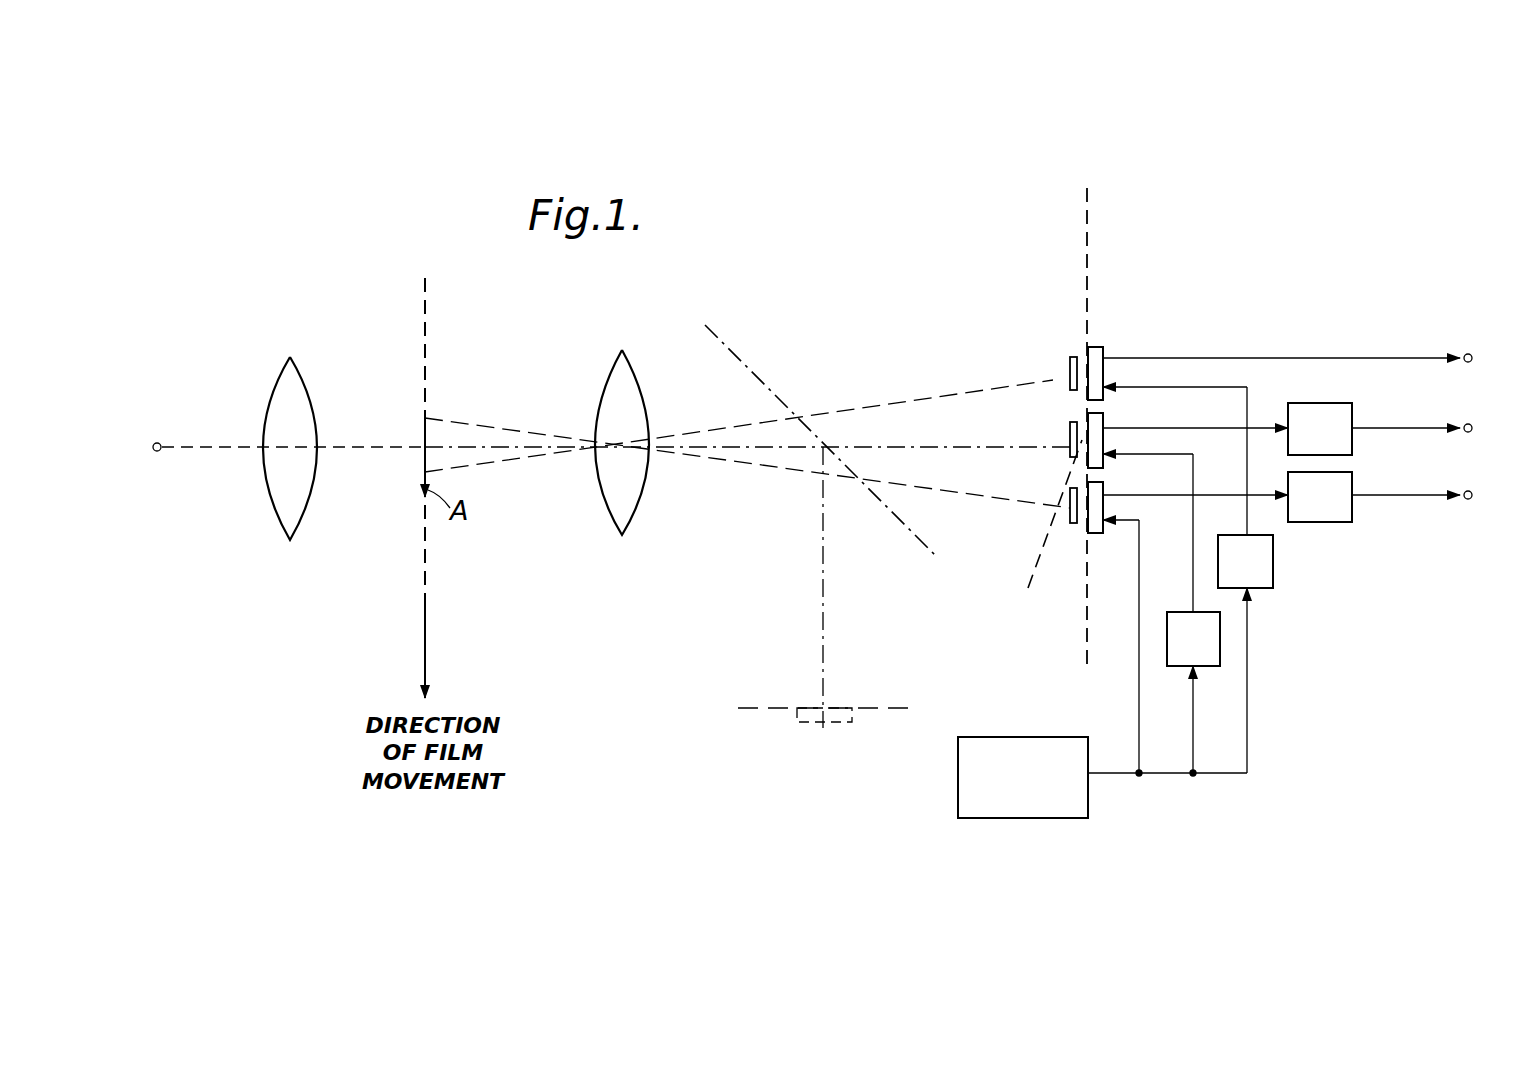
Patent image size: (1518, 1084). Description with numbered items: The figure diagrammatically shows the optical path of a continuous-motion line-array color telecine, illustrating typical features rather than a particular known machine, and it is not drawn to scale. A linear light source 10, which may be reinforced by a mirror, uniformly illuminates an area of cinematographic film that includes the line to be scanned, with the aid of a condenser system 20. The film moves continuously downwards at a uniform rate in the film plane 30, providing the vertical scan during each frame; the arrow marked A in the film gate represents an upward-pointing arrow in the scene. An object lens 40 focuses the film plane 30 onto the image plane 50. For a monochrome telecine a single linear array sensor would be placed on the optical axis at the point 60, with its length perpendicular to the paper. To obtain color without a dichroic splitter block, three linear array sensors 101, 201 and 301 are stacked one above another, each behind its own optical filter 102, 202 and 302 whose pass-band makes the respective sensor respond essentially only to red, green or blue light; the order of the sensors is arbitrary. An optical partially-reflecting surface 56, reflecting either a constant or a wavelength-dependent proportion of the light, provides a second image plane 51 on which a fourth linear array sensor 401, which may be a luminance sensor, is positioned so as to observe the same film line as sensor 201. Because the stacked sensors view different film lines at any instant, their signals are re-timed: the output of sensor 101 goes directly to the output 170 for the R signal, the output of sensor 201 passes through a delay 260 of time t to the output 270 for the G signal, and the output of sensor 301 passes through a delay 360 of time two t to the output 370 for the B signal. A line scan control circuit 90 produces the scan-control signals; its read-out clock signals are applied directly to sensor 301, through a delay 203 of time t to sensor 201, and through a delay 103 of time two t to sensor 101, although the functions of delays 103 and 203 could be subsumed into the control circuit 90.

The linear light source 10 is at (160, 443).
The condenser system 20 is at (290, 357).
The film plane 30 is at (427, 281).
The object lens 40 is at (623, 352).
The image plane 50 is at (1089, 192).
The second image plane 51 is at (742, 706).
The optical partially-reflecting surface 56 is at (712, 335).
The point on the optical axis 60 is at (1046, 529).
The line scan control circuit 90 is at (1088, 800).
The linear array sensor 101 is at (1106, 392).
The optical filter 102 is at (1070, 360).
The delay 103 is at (1273, 572).
The output 170 is at (1467, 354).
The linear array sensor 201 is at (1188, 440).
The optical filter 202 is at (1070, 428).
The delay 203 is at (1220, 650).
The delay 260 is at (1352, 405).
The output 270 is at (1467, 424).
The linear array sensor 301 is at (1188, 507).
The optical filter 302 is at (1075, 522).
The delay 360 is at (1338, 522).
The output 370 is at (1478, 481).
The fourth linear array sensor 401 is at (823, 724).